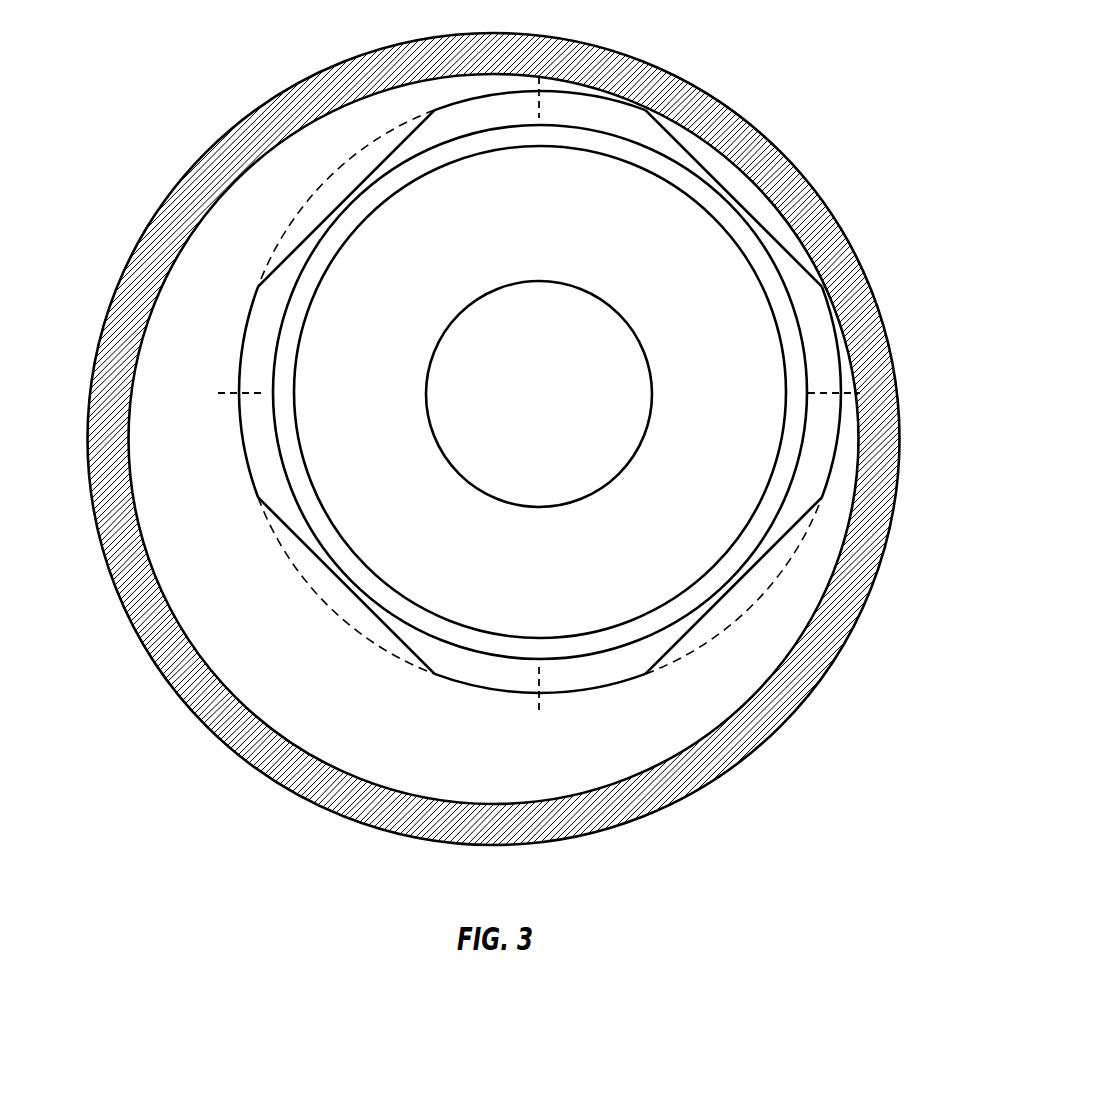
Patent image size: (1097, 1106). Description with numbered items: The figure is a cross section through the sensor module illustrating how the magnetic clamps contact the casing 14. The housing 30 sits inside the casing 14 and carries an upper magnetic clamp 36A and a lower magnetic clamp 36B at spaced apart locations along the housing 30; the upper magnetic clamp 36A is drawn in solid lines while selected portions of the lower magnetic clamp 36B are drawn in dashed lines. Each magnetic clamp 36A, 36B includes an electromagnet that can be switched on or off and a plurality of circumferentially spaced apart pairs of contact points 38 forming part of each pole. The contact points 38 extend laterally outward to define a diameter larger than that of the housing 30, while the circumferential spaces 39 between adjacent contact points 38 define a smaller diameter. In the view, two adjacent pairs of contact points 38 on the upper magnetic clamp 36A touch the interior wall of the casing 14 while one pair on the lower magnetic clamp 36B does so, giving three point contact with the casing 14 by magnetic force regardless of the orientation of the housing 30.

The casing 14 is at (300, 777).
The housing 30 is at (292, 331).
The upper magnetic clamp 36A is at (725, 448).
The lower magnetic clamp 36B is at (390, 657).
The contact points 38 is at (578, 113).
The circumferential spaces 39 is at (700, 170).